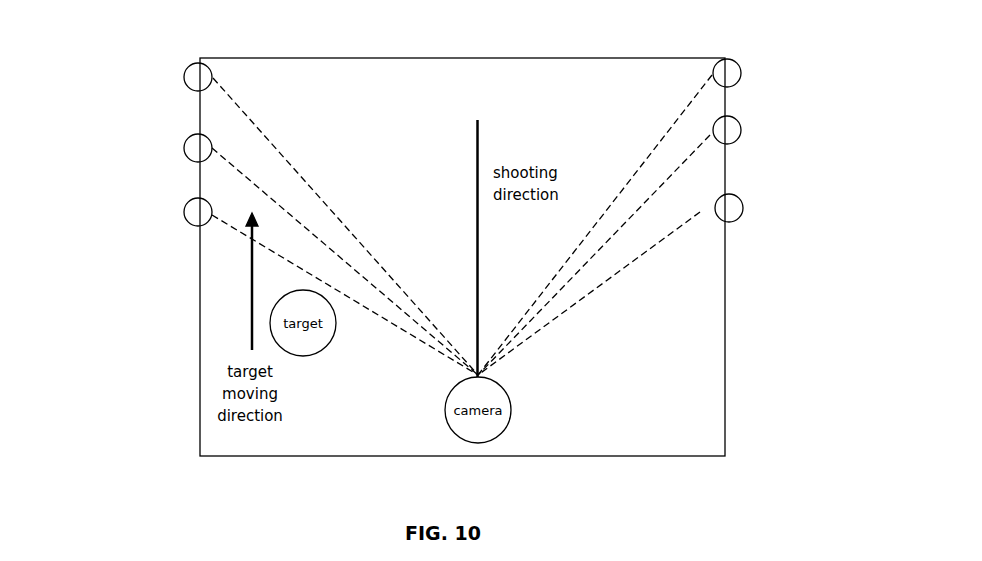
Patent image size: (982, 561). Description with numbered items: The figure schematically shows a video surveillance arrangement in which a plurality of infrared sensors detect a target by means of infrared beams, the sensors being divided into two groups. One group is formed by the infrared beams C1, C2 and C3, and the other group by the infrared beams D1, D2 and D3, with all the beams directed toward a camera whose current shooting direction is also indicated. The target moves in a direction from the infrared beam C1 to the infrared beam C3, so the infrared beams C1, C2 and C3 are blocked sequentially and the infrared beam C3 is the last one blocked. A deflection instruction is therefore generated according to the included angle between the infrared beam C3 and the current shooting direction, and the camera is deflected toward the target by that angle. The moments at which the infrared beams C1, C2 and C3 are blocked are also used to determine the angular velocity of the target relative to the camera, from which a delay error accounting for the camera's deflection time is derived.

The infrared beam C1 is at (196, 224).
The infrared beam C2 is at (184, 148).
The infrared beam C3 is at (184, 79).
The infrared beam D1 is at (727, 220).
The infrared beam D2 is at (741, 131).
The infrared beam D3 is at (741, 73).